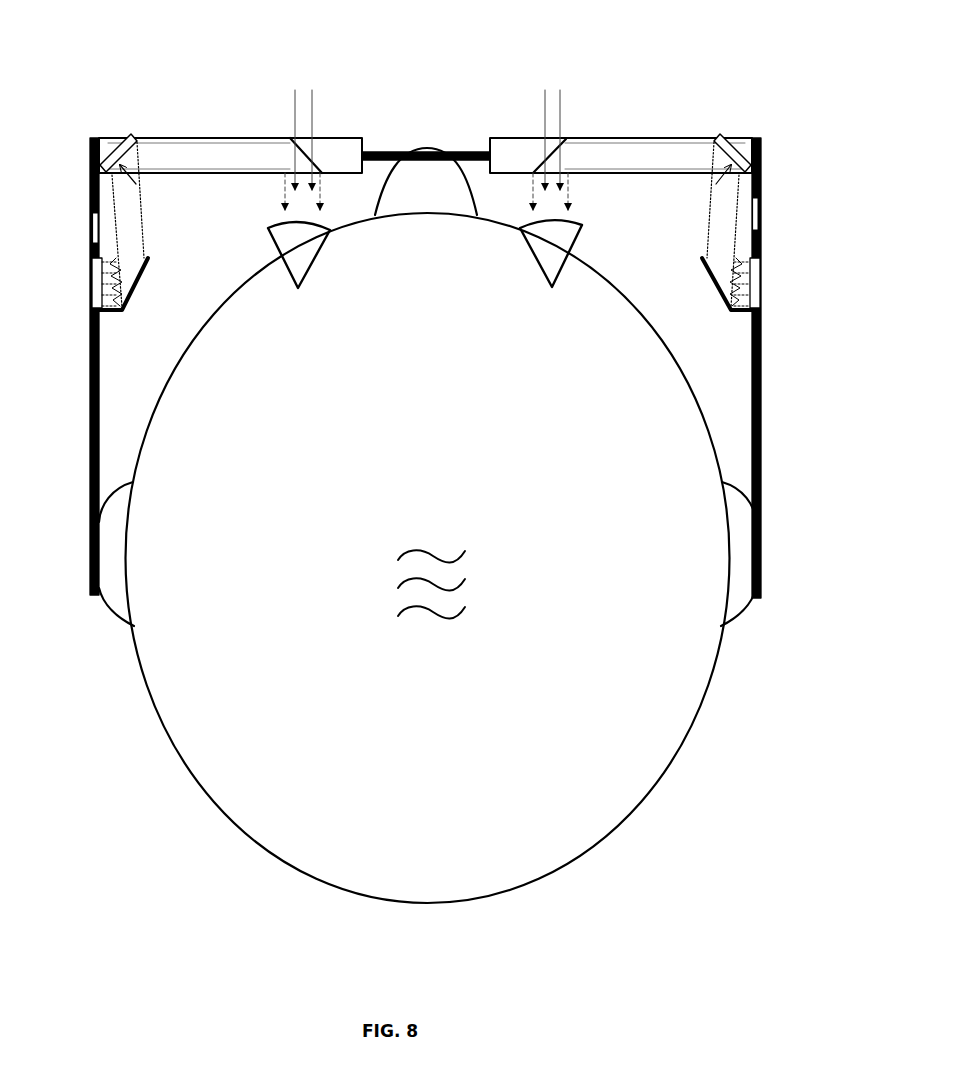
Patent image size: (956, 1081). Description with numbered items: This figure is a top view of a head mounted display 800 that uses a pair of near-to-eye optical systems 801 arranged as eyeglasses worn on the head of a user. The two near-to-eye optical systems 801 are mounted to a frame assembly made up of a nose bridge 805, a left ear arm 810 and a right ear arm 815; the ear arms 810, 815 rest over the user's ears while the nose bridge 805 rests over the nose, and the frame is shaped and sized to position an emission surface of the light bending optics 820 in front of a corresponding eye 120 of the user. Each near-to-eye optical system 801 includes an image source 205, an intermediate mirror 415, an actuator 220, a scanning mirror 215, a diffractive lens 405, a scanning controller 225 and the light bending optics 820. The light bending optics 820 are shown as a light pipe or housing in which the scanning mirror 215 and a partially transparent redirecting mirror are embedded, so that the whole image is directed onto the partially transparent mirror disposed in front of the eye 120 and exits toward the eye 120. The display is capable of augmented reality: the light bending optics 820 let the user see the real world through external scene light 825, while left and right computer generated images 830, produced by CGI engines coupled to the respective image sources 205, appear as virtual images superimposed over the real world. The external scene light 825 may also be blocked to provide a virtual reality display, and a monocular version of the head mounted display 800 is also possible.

The head mounted display 800 is at (93, 35).
The near-to-eye optical system 801 is at (242, 98).
The nose bridge 805 is at (467, 152).
The left ear arm 810 is at (90, 370).
The right ear arm 815 is at (761, 370).
The light bending optics 820 is at (230, 138).
The external scene light 825 is at (312, 106).
The computer generated image 830 is at (284, 214).
The actuator 220 is at (102, 138).
The scanning controller 225 is at (92, 230).
The image source 205 is at (96, 287).
The intermediate mirror 415 is at (140, 279).
The eye 120 is at (305, 281).
The scanning mirror 215 is at (425, 224).
The diffractive lens 405 is at (136, 185).